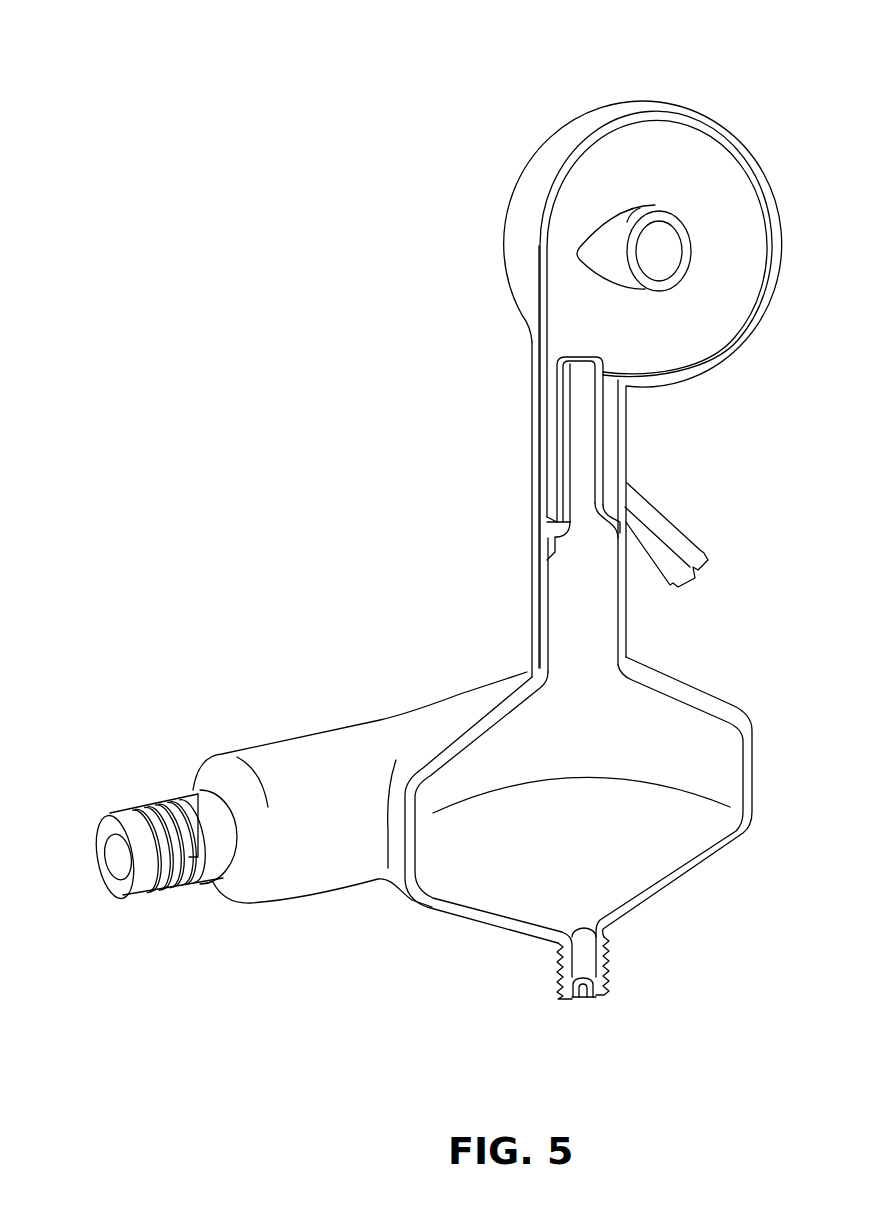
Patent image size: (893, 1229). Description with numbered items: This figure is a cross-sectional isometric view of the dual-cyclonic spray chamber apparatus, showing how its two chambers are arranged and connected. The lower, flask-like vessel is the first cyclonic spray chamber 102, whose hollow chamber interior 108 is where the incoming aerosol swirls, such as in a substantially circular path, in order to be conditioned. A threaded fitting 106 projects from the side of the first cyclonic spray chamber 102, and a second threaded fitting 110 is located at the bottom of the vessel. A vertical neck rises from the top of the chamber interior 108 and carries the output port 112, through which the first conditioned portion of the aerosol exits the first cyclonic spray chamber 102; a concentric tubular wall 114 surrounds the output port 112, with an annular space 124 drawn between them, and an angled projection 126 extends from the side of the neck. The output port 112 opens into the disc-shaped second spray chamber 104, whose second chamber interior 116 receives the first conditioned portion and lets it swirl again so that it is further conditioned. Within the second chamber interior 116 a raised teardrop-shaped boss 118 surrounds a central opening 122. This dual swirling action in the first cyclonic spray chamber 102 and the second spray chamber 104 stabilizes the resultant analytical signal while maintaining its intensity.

The first cyclonic spray chamber 102 is at (450, 713).
The second spray chamber 104 is at (670, 112).
The threaded inlet nipple 106 is at (97, 833).
The chamber interior 108 is at (633, 823).
The threaded outlet nozzle 110 is at (583, 983).
The output port 112 is at (587, 412).
The outer tube 114 is at (533, 450).
The second chamber interior 116 is at (677, 327).
The hub boss 118 is at (628, 220).
The central bore 122 is at (663, 257).
The annular sleeve gap 124 is at (555, 423).
The mounting bracket 126 is at (683, 540).